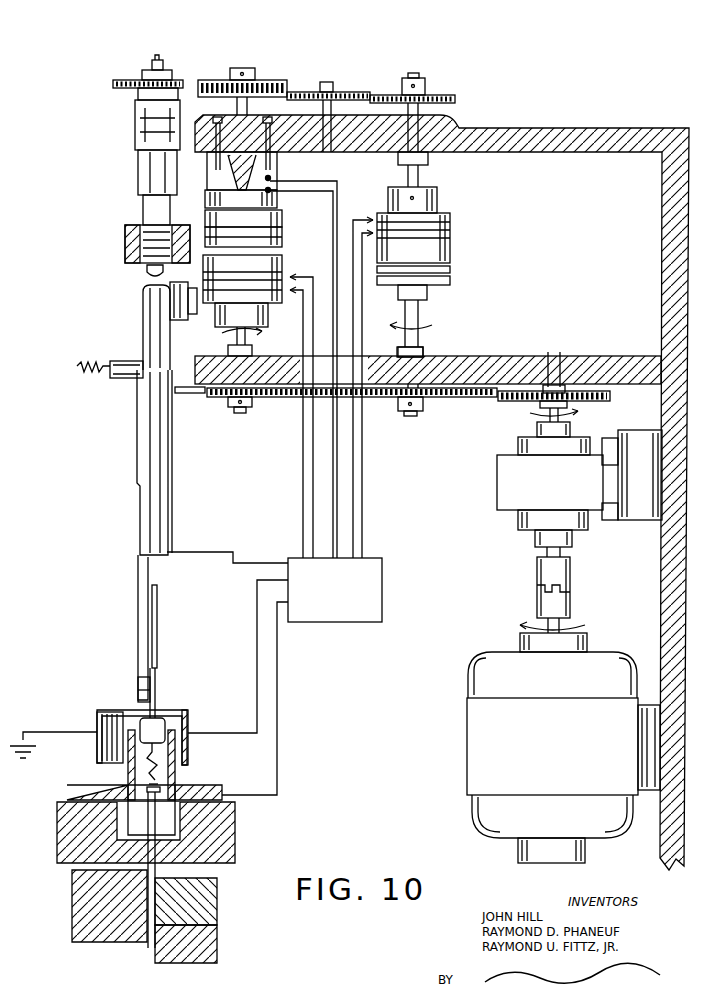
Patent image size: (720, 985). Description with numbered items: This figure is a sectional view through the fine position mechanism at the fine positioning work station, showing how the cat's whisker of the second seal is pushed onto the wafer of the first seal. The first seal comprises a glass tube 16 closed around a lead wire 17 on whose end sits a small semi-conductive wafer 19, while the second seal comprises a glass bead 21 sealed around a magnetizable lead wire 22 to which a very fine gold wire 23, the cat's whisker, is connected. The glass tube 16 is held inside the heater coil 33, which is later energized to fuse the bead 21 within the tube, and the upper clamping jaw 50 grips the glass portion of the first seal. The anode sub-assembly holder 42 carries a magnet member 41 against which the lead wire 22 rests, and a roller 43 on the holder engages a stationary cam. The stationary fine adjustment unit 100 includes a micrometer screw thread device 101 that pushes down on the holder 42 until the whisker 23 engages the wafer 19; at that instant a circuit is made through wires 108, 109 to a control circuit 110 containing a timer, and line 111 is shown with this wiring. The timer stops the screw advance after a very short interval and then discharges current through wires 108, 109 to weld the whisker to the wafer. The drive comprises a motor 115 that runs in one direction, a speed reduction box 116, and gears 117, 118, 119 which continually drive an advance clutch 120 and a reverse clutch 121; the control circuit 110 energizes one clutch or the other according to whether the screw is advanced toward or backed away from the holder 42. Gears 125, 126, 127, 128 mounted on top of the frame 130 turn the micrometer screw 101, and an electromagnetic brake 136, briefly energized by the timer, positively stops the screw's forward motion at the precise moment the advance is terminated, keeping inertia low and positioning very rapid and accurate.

The fine adjustment unit 100 is at (504, 128).
The micrometer screw thread device 101 is at (125, 239).
The wire 108 is at (222, 552).
The wire 109 is at (277, 675).
The control circuit 110 is at (382, 606).
The conductor 111 is at (257, 612).
The motor 115 is at (467, 755).
The speed reduction box 116 is at (497, 493).
The gear 117 is at (598, 396).
The gear 118 is at (452, 398).
The gear 119 is at (275, 398).
The advance clutch 120 is at (262, 318).
The reverse clutch 121 is at (430, 295).
The gear 125 is at (440, 95).
The gear 126 is at (351, 92).
The gear 127 is at (262, 80).
The gear 128 is at (178, 82).
The frame 130 is at (570, 156).
The electromagnetic brake 136 is at (270, 177).
The glass tube 16 is at (172, 770).
The lead wire 17 is at (147, 945).
The semi-conductive wafer 19 is at (160, 790).
The glass bead 21 is at (157, 712).
The lead wire 22 is at (154, 618).
The fine wire 23 is at (128, 765).
The heater coil 33 is at (188, 710).
The magnet member 41 is at (138, 683).
The sub-assembly holder 42 is at (145, 525).
The roller 43 is at (175, 320).
The upper clamping jaw 50 is at (217, 910).